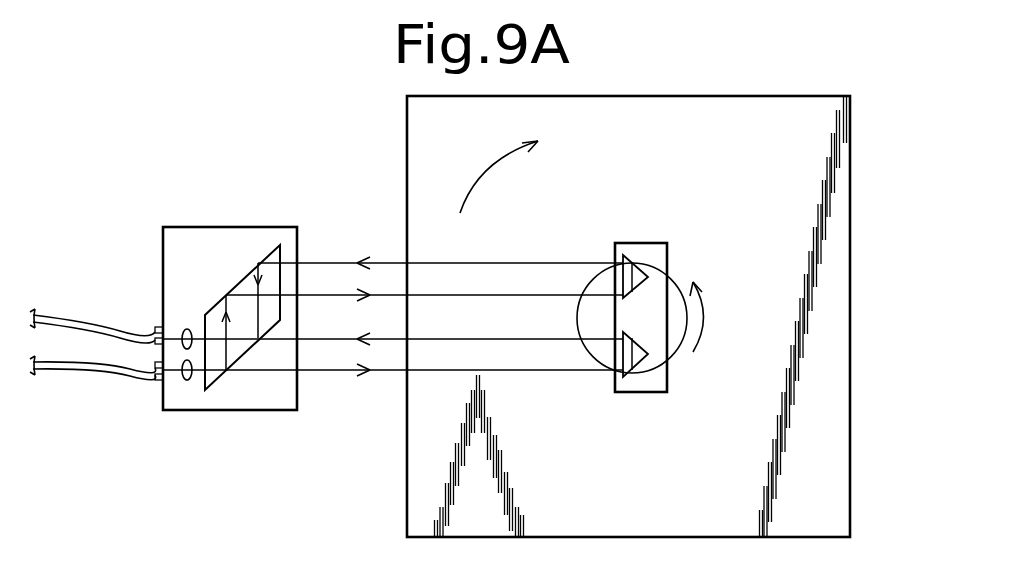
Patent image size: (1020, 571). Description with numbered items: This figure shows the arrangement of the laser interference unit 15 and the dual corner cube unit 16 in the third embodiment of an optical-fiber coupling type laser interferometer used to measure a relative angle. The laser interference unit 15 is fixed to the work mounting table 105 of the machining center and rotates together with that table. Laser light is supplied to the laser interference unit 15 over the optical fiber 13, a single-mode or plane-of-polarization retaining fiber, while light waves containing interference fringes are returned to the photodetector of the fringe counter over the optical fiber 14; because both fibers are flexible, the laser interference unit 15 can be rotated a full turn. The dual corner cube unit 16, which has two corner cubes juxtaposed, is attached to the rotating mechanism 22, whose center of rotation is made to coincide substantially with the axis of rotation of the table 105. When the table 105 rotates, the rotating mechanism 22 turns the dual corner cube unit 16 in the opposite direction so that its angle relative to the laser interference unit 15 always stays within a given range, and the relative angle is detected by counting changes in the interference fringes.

The optical fiber 13 is at (88, 375).
The optical fiber 14 is at (95, 328).
The laser interference unit 15 is at (265, 227).
The dual corner cube unit 16 is at (639, 243).
The rotating mechanism 22 is at (670, 353).
The table 105 is at (852, 397).